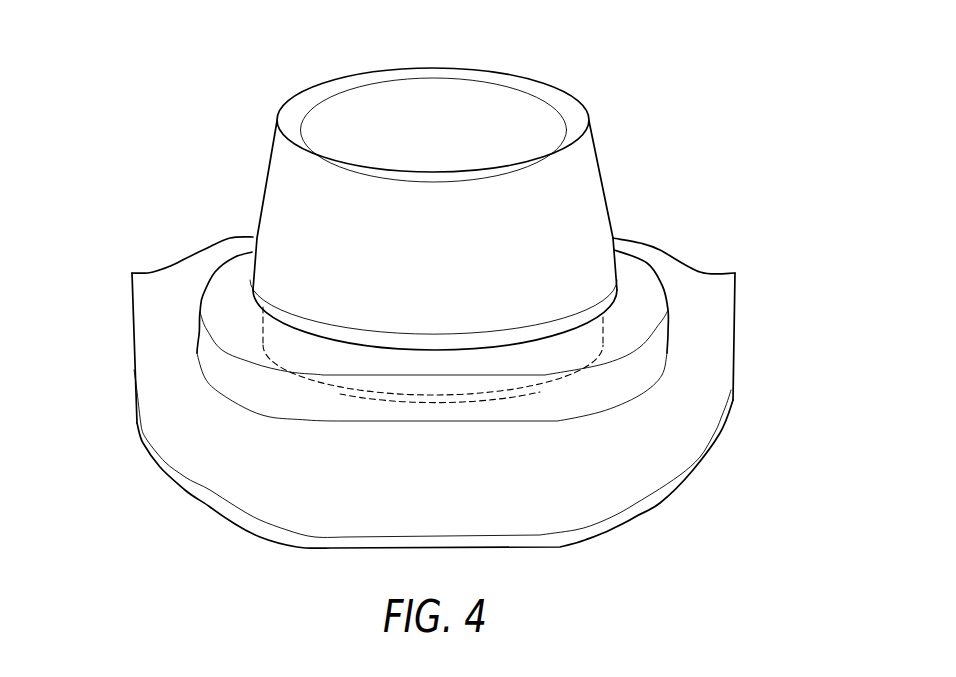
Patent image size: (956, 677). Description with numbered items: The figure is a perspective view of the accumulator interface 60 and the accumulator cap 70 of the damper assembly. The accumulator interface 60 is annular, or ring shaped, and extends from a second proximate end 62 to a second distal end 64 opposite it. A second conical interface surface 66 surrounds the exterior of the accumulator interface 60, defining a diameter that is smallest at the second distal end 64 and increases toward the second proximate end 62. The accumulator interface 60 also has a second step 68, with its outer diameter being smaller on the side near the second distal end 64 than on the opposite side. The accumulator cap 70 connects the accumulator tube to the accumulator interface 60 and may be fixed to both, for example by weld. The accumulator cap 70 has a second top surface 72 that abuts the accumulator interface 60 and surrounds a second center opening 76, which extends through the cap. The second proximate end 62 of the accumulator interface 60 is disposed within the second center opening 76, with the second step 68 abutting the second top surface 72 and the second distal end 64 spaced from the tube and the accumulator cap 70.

The accumulator interface 60 is at (283, 190).
The second proximate end 62 is at (300, 347).
The second distal end 64 is at (295, 108).
The second conical interface surface 66 is at (582, 190).
The second step 68 is at (260, 318).
The accumulator cap 70 is at (683, 437).
The second top surface 72 is at (617, 500).
The second center opening 76 is at (357, 388).